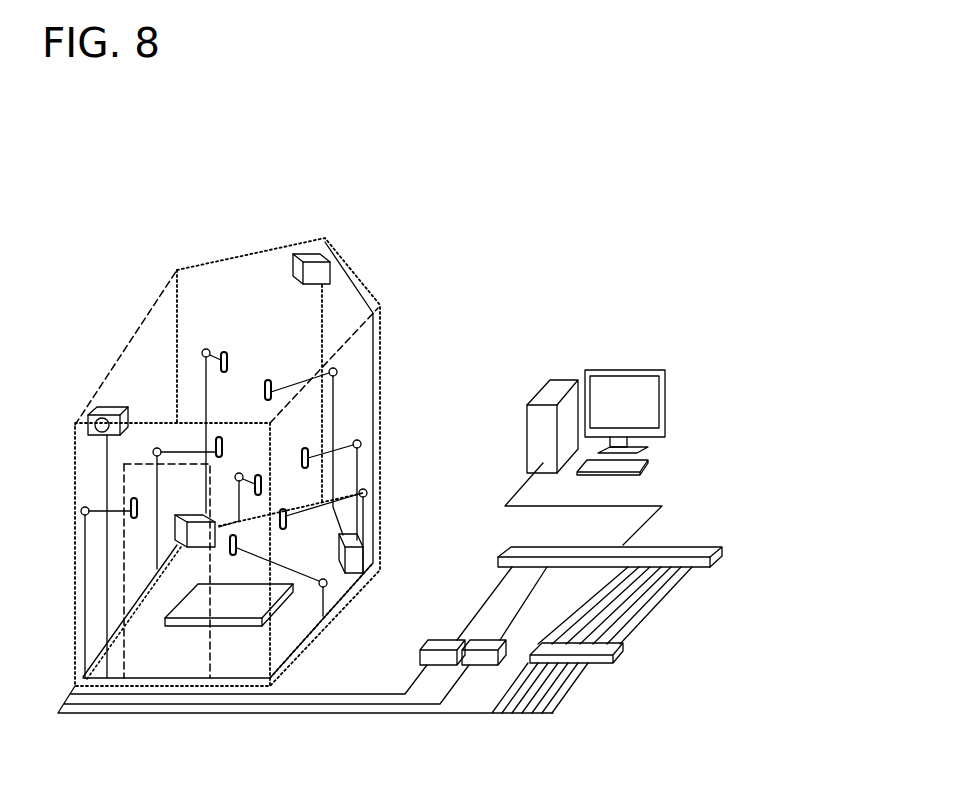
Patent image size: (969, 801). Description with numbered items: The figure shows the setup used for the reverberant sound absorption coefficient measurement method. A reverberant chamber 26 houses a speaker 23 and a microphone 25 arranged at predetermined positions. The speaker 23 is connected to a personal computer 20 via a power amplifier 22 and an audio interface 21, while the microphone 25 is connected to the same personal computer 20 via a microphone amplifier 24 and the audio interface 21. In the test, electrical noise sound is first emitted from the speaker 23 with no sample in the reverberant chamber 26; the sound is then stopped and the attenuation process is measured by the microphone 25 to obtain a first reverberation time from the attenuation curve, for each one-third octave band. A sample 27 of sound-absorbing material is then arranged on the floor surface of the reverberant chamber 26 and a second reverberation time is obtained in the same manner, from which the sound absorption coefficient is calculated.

The personal computer 20 is at (632, 366).
The audio interface 21 is at (698, 547).
The power amplifier 22 is at (430, 643).
The speaker 23 is at (110, 407).
The microphone amplifier 24 is at (621, 652).
The microphone 25 is at (224, 352).
The reverberant chamber 26 is at (270, 250).
The sample 27 is at (190, 628).